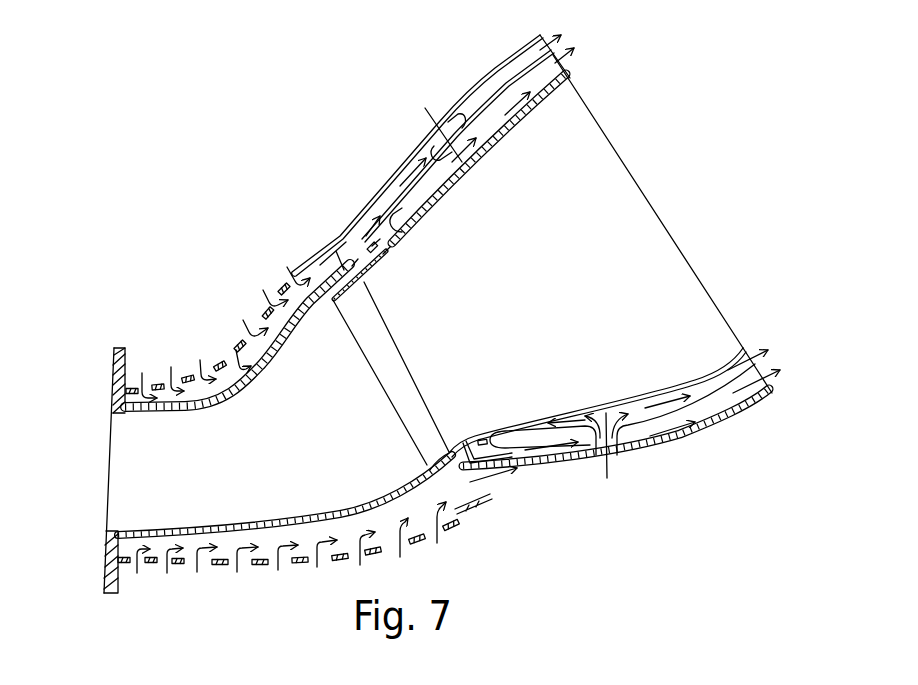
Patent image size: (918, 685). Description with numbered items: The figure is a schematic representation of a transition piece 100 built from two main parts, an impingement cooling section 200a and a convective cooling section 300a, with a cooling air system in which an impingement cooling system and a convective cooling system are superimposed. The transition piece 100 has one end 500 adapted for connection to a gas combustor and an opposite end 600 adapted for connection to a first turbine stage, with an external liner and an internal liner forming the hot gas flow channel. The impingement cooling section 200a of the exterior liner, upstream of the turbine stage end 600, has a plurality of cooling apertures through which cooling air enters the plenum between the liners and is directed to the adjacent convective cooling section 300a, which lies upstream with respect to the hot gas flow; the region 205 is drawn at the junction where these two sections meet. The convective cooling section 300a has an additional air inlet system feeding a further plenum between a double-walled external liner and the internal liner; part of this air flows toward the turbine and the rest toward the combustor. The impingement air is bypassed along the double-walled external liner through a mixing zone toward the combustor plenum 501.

The transition piece 100 is at (282, 165).
The impingement cooling section 200a is at (245, 293).
The convective cooling section 300a is at (445, 87).
The bleed gap at wall junction 205 is at (381, 240).
The end adapted for connection to a gas combustor 500 is at (655, 209).
The combustor plenum 501 is at (827, 361).
The end adapted for connection to a first turbine stage 600 is at (108, 438).